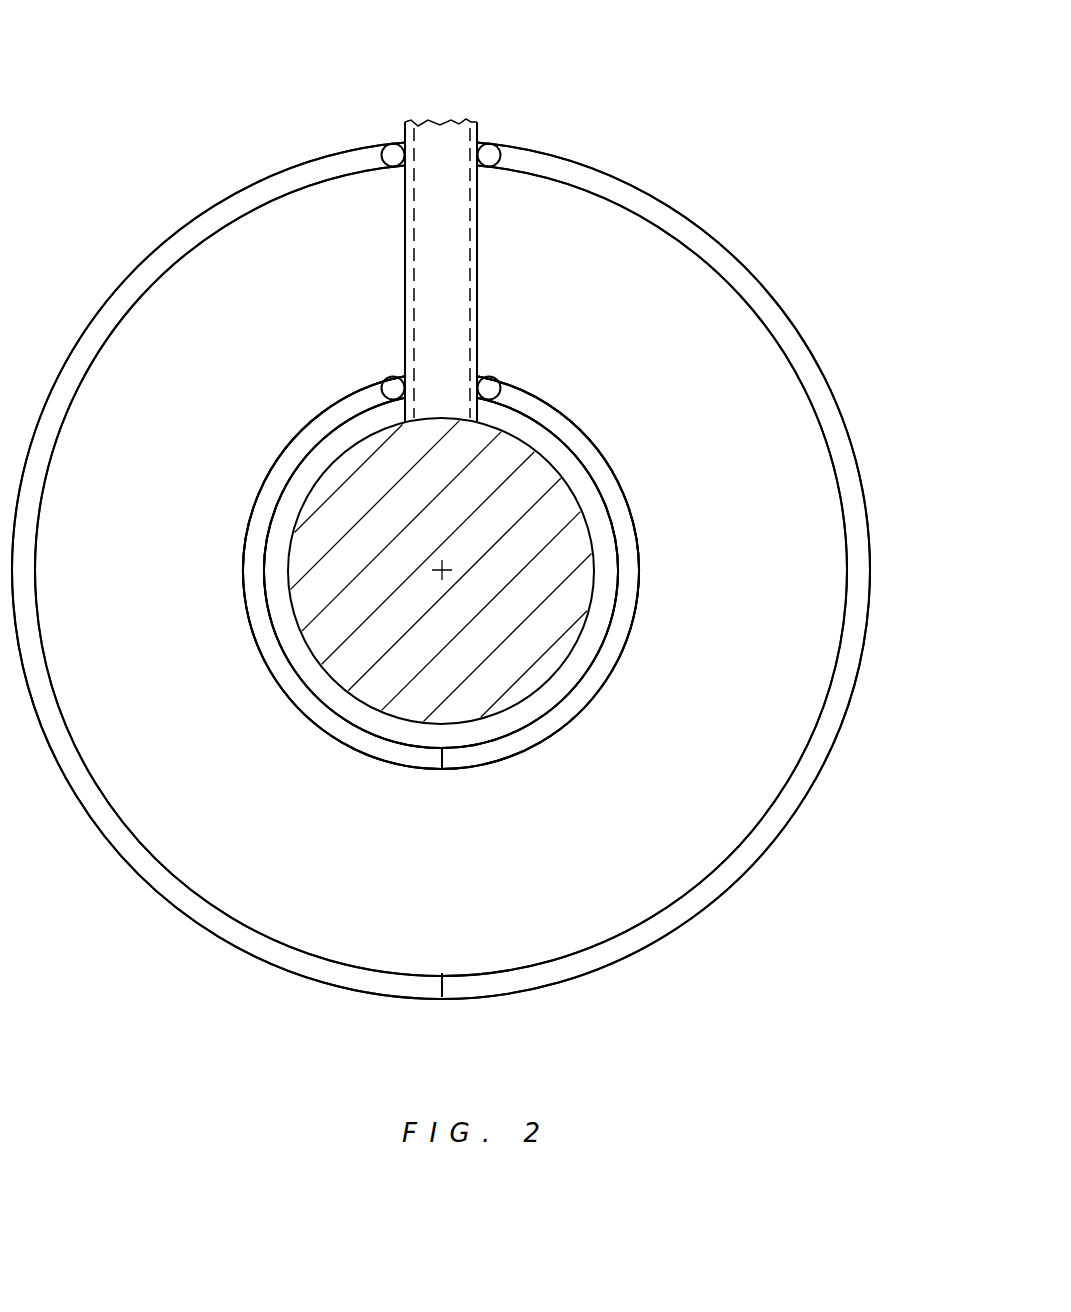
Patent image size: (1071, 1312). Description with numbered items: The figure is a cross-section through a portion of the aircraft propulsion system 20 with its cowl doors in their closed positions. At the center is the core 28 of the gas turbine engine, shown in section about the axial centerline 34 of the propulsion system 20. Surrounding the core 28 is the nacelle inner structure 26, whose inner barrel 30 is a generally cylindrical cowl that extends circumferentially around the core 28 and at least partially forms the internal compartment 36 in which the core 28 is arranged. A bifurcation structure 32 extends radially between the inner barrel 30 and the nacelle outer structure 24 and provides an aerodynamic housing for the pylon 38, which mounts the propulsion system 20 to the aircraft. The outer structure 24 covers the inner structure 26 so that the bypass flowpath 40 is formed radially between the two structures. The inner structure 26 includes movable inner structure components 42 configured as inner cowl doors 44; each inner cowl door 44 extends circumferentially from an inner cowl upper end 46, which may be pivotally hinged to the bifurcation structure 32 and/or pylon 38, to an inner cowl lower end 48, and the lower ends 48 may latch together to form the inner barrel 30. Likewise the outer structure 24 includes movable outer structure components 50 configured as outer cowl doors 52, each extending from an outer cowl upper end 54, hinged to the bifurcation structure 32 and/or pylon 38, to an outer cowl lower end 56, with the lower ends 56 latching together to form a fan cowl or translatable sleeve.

The aircraft propulsion system 20 is at (698, 88).
The nacelle outer structure 24 is at (720, 220).
The nacelle inner structure 26 is at (578, 383).
The core 28 is at (592, 528).
The inner barrel 30 is at (620, 455).
The bifurcation structure 32 is at (480, 248).
The axial centerline 34 is at (445, 573).
The internal compartment 36 is at (597, 620).
The pylon 38 is at (414, 214).
The bypass flowpath 40 is at (335, 841).
The inner structure component 42 is at (268, 673).
The inner cowl door 44 is at (441, 573).
The inner cowl upper end 46 is at (388, 377).
The inner cowl lower end 48 is at (442, 770).
The outer structure component 50 is at (182, 227).
The outer cowl door 52 is at (441, 571).
The outer cowl upper end 54 is at (390, 144).
The outer cowl lower end 56 is at (442, 997).